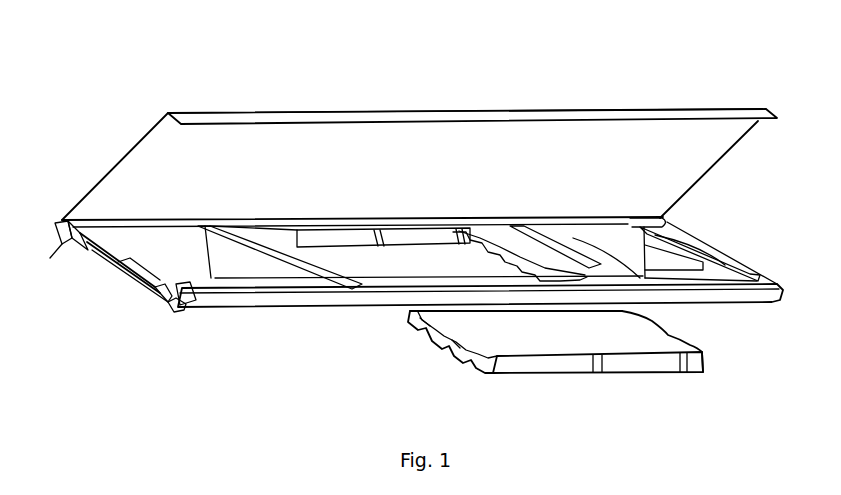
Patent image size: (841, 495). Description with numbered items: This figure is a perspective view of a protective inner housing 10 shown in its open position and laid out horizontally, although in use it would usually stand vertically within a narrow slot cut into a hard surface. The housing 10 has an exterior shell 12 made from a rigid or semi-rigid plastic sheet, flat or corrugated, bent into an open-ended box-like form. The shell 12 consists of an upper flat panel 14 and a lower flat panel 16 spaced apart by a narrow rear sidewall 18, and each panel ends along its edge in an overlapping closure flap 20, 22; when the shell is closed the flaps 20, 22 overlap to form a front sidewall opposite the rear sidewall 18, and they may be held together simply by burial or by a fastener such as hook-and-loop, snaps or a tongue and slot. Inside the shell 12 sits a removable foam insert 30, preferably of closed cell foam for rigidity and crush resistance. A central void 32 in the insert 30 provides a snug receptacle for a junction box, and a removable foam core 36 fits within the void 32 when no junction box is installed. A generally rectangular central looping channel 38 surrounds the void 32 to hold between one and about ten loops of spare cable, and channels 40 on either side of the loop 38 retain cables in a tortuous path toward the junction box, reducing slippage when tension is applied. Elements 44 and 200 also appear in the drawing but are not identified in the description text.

The protective inner housing 10 is at (588, 50).
The exterior shell 12 is at (446, 164).
The upper flat panel 14 is at (683, 197).
The lower flat panel 16 is at (126, 277).
The rear sidewall 18 is at (37, 217).
The closure flap 20 is at (467, 90).
The closure flap 22 is at (422, 284).
The removable foam insert 30 is at (94, 293).
The central void 32 is at (365, 303).
The removable foam core 36 is at (569, 364).
The central looping channel 38 is at (451, 301).
The channels 40 is at (419, 238).
The pivot block 44 is at (55, 255).
The latch tab 200 is at (134, 332).